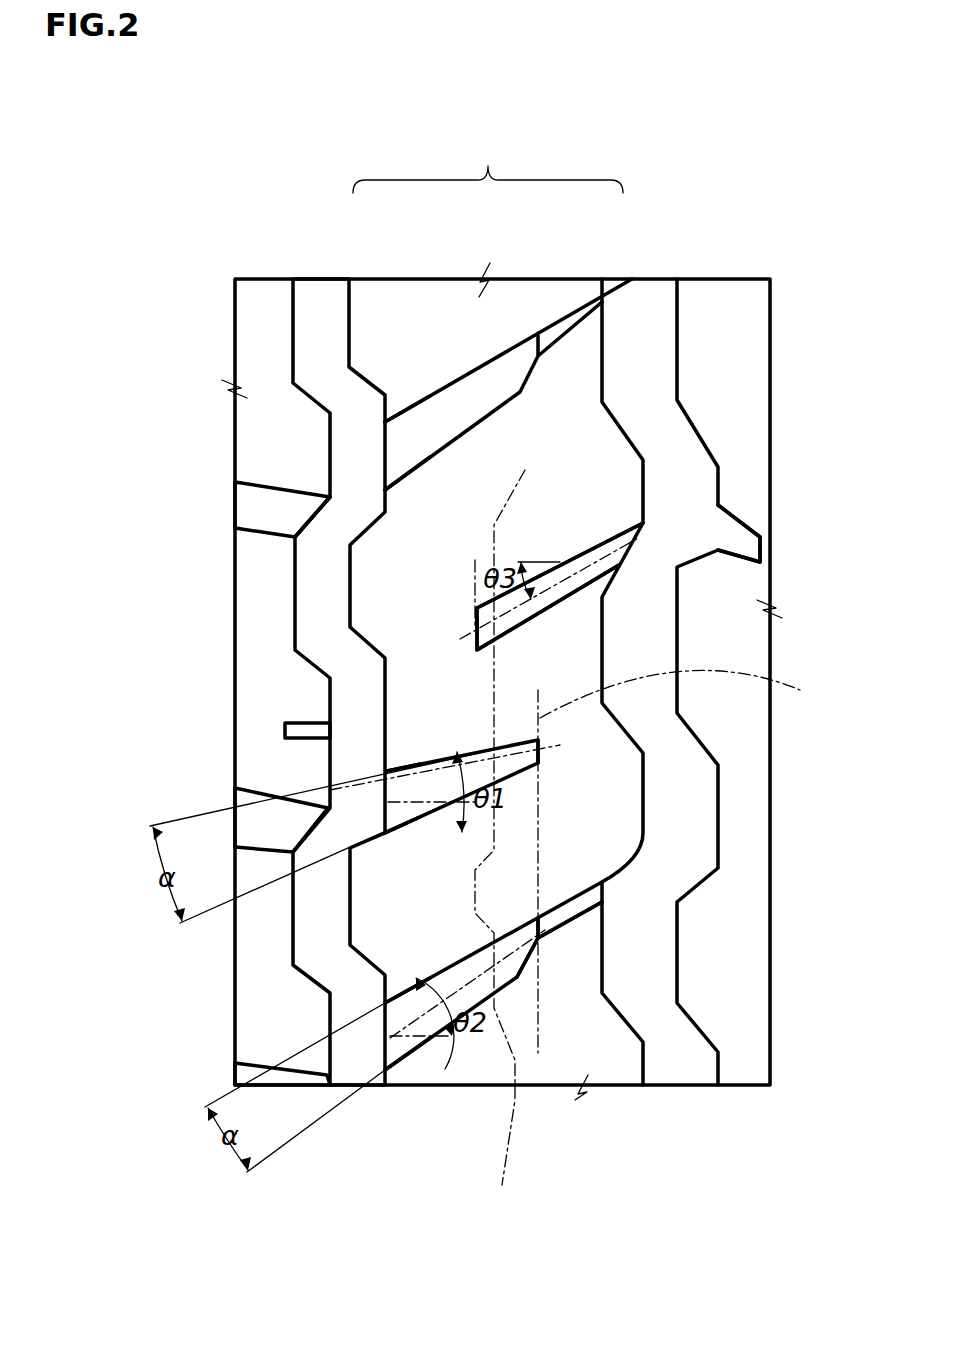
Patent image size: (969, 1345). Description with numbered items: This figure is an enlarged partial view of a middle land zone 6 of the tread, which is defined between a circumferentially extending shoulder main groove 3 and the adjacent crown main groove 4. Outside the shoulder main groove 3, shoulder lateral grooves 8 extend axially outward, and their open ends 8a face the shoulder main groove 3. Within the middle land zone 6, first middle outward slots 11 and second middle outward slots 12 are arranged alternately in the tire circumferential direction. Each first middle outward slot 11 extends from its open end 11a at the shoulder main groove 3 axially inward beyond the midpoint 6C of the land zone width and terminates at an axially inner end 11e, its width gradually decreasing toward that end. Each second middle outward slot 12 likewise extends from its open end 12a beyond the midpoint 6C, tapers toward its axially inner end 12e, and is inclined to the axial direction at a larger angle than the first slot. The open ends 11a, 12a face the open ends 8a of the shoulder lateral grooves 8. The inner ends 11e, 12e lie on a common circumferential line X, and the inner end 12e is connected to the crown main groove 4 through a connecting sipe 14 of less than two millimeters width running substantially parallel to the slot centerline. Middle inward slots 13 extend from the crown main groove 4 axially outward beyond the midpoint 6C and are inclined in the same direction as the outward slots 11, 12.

The shoulder main groove 3 is at (322, 300).
The crown main groove 4 is at (653, 305).
The middle land zone 6 is at (488, 166).
The midpoint of the width of the middle land zone 6C is at (500, 842).
The shoulder lateral groove 8 is at (275, 487).
The open end of the shoulder lateral groove 8a is at (313, 510).
The first middle outward slot 11 is at (430, 763).
The open end of the first middle outward slot 11a is at (330, 793).
The axially inner end of the first middle outward slot 11e is at (540, 756).
The second middle outward slot 12 is at (443, 395).
The open end of the second middle outward slot 12a is at (385, 447).
The axially inner end of the second middle outward slot 12e is at (540, 941).
The middle inward slot 13 is at (590, 548).
The connecting sipe 14 is at (568, 908).
The circumferential line X is at (682, 694).